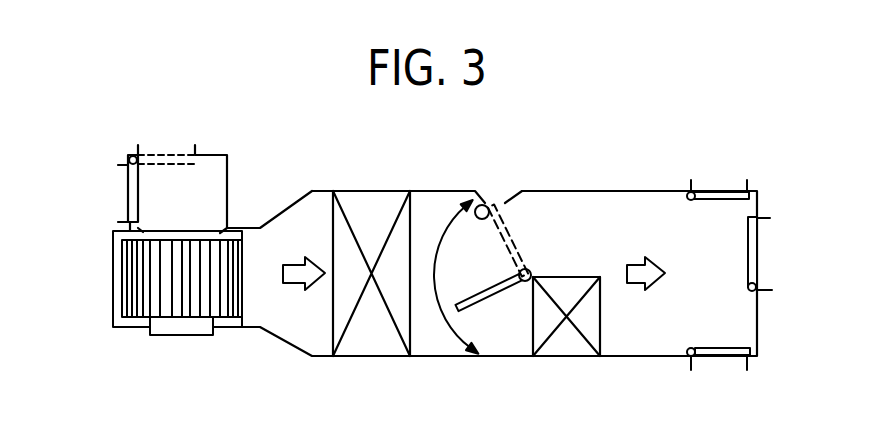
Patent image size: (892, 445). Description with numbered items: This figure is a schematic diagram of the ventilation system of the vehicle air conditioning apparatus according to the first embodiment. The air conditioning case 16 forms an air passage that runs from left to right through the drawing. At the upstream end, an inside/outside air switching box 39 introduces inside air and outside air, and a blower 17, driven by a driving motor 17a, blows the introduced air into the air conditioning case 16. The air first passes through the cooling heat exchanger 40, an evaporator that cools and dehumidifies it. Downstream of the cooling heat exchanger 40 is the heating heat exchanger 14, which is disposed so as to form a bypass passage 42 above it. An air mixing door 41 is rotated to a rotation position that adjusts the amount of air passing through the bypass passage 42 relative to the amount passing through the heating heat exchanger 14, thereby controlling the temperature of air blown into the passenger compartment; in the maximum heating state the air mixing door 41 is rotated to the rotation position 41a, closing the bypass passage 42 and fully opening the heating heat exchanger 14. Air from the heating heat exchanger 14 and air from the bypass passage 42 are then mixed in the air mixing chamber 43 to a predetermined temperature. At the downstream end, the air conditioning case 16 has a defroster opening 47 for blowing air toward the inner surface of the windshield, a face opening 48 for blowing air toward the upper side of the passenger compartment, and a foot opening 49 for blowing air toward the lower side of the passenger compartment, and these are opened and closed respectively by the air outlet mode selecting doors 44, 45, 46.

The heating heat exchanger 14 is at (565, 347).
The air conditioning case 16 is at (433, 190).
The blower 17 is at (140, 277).
The driving motor 17a is at (183, 327).
The inside/outside air switching box 39 is at (230, 178).
The cooling heat exchanger 40 is at (364, 208).
The air mixing door 41 is at (488, 293).
The rotation position 41a is at (486, 198).
The bypass passage 42 is at (572, 230).
The air mixing chamber 43 is at (685, 272).
The air outlet mode selecting door 44 is at (730, 192).
The air outlet mode selecting door 45 is at (755, 232).
The air outlet mode selecting door 46 is at (720, 348).
The defroster opening 47 is at (700, 183).
The face opening 48 is at (765, 272).
The foot opening 49 is at (732, 363).